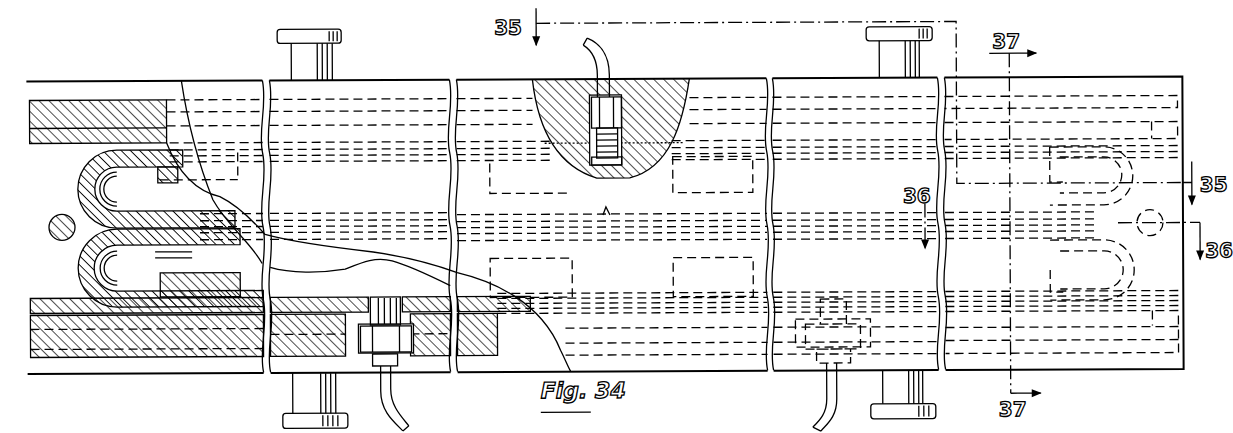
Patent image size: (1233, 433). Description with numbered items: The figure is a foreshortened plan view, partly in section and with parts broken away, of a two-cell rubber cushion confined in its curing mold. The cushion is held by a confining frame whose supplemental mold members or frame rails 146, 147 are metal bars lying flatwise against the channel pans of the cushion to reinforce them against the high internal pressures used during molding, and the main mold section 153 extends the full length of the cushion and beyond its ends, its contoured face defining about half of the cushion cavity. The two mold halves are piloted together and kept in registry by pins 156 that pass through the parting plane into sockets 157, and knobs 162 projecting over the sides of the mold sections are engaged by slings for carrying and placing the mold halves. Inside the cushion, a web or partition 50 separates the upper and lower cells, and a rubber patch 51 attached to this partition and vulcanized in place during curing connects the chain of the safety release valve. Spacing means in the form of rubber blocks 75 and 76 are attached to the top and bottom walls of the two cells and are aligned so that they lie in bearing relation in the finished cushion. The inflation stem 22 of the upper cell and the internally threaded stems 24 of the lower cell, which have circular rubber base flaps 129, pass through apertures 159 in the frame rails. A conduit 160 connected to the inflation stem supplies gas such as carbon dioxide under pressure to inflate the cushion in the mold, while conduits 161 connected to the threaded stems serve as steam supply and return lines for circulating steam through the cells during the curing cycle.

The inflation stem 22 is at (570, 178).
The internally threaded stems 24 is at (375, 295).
The web or partition 50 is at (198, 222).
The rubber patch 51 is at (610, 207).
The rubber blocks 75 is at (490, 168).
The rubber blocks 76 is at (158, 178).
The circular rubber base flaps 129 is at (353, 291).
The metal bar 146 is at (135, 98).
The metal bar 147 is at (148, 357).
The mold section 153 is at (412, 88).
The pins 156 is at (60, 212).
The sockets 157 is at (1185, 425).
The apertures 159 is at (618, 98).
The conduit 160 is at (582, 50).
The conduits 161 is at (820, 410).
The knobs 162 is at (342, 35).